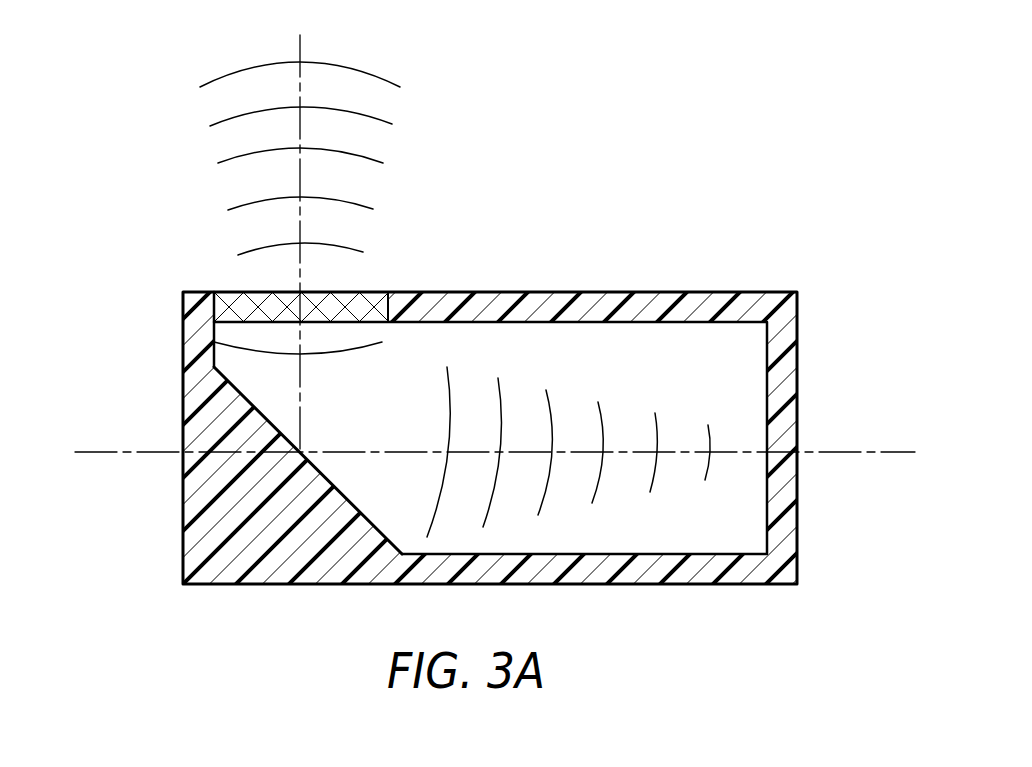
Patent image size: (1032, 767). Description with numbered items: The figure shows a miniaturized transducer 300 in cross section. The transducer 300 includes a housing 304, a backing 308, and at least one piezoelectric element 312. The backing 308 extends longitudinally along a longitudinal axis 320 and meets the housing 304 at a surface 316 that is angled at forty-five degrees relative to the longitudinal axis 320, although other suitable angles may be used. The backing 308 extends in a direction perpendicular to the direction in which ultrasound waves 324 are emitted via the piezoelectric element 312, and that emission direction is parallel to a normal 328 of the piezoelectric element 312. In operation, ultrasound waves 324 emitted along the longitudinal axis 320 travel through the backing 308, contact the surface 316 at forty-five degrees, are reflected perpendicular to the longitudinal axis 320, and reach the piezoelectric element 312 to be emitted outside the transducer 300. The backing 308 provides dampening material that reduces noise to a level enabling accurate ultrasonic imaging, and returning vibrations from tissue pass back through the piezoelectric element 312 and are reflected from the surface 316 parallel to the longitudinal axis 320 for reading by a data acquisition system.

The miniaturized transducer 300 is at (516, 389).
The housing 304 is at (210, 493).
The backing 308 is at (740, 523).
The piezoelectric element 312 is at (250, 298).
The surface 316 is at (313, 467).
The longitudinal axis 320 is at (852, 452).
The ultrasound waves/signals 324 is at (380, 118).
The normal 328 is at (300, 42).